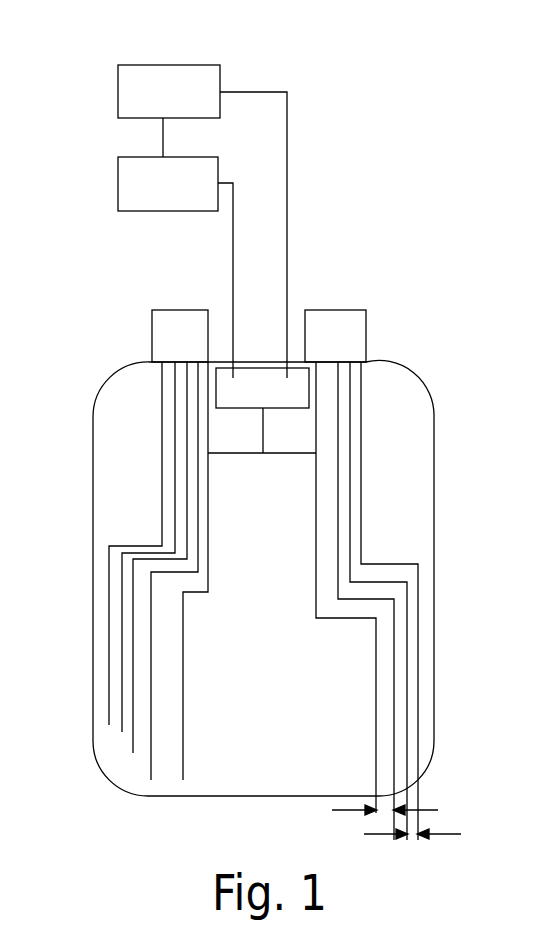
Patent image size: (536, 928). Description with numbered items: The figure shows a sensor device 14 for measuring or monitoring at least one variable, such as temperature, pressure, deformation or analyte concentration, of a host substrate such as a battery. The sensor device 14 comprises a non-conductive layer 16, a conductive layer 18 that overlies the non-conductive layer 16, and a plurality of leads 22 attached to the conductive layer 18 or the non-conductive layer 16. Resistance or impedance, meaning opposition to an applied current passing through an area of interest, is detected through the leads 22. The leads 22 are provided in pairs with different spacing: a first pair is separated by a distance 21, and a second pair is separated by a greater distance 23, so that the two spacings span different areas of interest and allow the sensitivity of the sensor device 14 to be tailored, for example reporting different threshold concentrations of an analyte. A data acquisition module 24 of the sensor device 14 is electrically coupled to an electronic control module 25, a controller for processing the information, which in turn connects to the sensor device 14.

The sensor device 14 is at (452, 452).
The non-conductive layer 16 is at (365, 361).
The conductive layer 18 is at (127, 402).
The distance 21 is at (461, 834).
The lead 22 is at (122, 570).
The distance 23 is at (165, 157).
The data acquisition module 24 is at (272, 378).
The electronic control module 25 is at (170, 65).